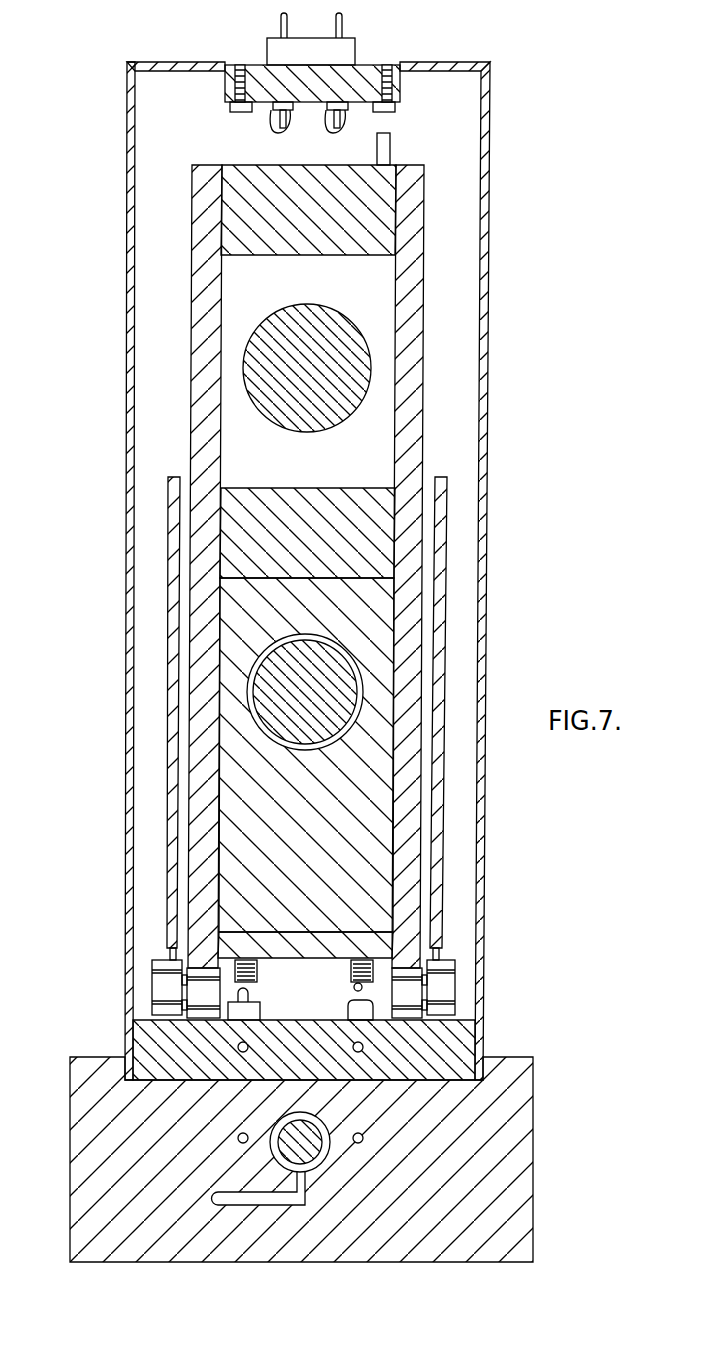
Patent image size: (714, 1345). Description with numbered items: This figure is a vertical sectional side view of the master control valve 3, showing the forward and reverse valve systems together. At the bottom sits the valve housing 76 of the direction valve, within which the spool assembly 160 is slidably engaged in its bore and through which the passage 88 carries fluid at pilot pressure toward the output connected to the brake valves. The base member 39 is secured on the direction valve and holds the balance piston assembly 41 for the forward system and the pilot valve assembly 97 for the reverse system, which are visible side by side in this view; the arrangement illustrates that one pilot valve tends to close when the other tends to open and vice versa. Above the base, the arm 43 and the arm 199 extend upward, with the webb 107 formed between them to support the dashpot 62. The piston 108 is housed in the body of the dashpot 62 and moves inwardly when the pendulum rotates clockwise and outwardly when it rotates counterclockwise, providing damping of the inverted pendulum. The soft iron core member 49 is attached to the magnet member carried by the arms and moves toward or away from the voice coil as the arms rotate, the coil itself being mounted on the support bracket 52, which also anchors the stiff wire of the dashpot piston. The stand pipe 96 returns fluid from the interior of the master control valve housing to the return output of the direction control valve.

The master control valve 3 is at (120, 436).
The stand pipe 96 is at (393, 146).
The arm 43 is at (202, 437).
The arm 199 is at (418, 322).
The soft iron core member 49 is at (333, 417).
The webb 107 is at (240, 839).
The dashpot 62 is at (345, 730).
The piston 108 is at (330, 657).
The support bracket 52 is at (172, 633).
The balance piston assembly 41 is at (258, 989).
The pilot valve assembly 97 is at (347, 990).
The valve housing 76 is at (513, 1200).
The base member 39 is at (468, 1038).
The passage 88 is at (263, 1200).
The spool assembly 160 is at (313, 1152).